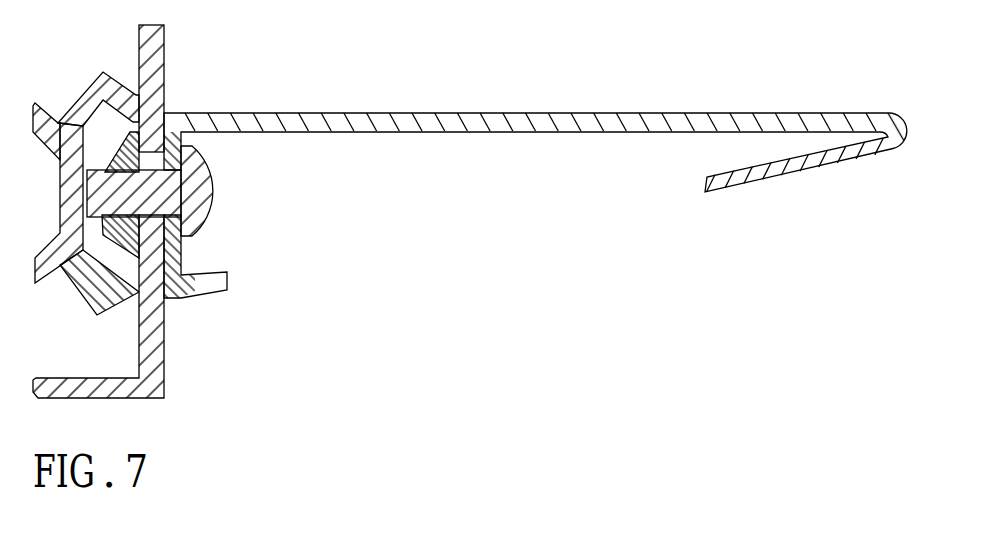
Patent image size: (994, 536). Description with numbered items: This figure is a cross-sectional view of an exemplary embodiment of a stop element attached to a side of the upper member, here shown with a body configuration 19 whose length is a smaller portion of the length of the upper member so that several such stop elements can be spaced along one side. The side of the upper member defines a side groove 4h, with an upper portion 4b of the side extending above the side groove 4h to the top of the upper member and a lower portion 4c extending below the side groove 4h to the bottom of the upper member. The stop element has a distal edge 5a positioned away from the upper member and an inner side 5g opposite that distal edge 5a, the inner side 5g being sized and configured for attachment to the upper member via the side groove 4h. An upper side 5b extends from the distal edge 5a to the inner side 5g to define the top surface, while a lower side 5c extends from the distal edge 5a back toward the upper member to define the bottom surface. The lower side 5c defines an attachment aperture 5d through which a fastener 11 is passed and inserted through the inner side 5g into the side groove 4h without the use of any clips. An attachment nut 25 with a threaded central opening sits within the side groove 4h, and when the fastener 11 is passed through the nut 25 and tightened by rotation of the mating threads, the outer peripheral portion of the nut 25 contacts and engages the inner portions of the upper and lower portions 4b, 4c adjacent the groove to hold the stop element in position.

The upper portion 4b is at (165, 62).
The lower portion 4c is at (165, 335).
The side groove 4h is at (103, 266).
The attachment nut 25 is at (118, 143).
The fastener 11 is at (203, 196).
The upper side 5b is at (445, 113).
The distal edge 5a is at (907, 134).
The lower side 5c is at (742, 188).
The inner side 5g is at (182, 134).
The attachment aperture 5d is at (427, 225).
The body configuration 19 is at (655, 320).